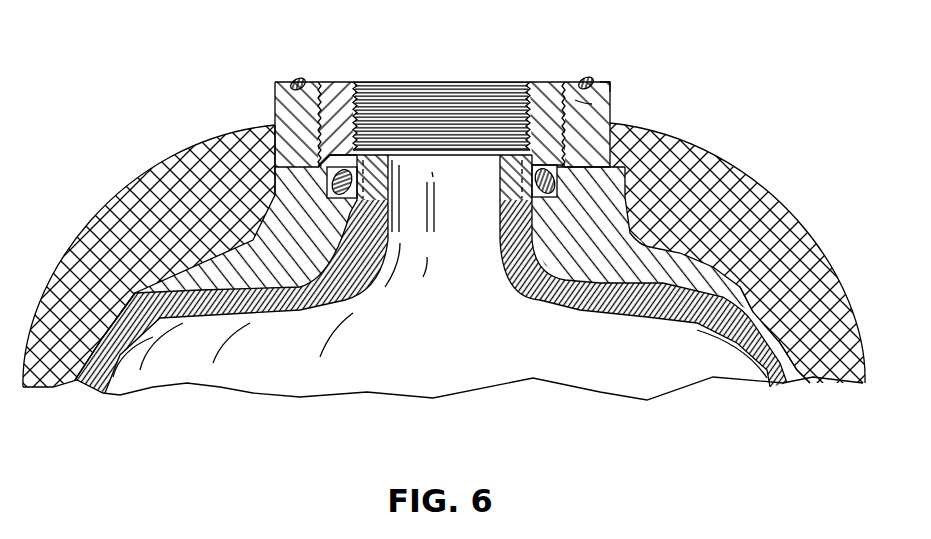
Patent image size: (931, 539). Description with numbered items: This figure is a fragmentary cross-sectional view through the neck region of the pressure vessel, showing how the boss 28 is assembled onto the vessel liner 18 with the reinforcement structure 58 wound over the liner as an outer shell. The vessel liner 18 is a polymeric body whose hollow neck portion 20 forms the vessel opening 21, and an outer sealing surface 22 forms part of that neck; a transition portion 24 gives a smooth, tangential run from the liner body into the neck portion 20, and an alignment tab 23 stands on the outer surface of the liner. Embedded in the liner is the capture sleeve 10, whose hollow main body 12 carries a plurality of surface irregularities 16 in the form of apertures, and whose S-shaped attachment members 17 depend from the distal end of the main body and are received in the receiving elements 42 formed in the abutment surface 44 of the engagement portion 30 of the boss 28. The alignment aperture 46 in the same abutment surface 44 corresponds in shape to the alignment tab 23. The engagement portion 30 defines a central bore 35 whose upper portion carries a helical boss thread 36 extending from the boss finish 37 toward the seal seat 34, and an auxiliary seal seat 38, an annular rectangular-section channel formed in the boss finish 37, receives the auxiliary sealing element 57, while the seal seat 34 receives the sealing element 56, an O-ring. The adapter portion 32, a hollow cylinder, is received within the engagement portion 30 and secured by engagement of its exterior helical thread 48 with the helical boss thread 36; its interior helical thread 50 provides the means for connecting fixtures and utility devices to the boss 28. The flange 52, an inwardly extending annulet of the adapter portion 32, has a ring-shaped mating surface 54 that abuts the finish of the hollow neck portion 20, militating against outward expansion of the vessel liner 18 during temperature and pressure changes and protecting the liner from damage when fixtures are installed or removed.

The capture sleeve 10 is at (487, 207).
The hollow main body 12 is at (510, 167).
The surface irregularities 16 is at (522, 188).
The attachment members 17 is at (535, 213).
The vessel liner 18 is at (597, 303).
The hollow neck portion 20 is at (535, 200).
The vessel opening 21 is at (432, 172).
The outer sealing surface 22 is at (320, 203).
The alignment tab 23 is at (340, 228).
The transition portion 24 is at (535, 226).
The boss 28 is at (355, 65).
The engagement portion 30 is at (610, 93).
The adapter portion 32 is at (539, 80).
The seal seat 34 is at (620, 168).
The central bore 35 is at (468, 92).
The helical boss thread 36 is at (660, 137).
The boss finish 37 is at (604, 80).
The auxiliary seal seat 38 is at (289, 84).
The receiving elements 42 is at (512, 250).
The abutment surface 44 is at (547, 297).
The alignment aperture 46 is at (318, 238).
The exterior helical thread 48 is at (585, 104).
The interior helical thread 50 is at (447, 92).
The flange 52 is at (405, 148).
The mating surface 54 is at (273, 125).
The sealing element 56 is at (327, 192).
The auxiliary sealing element 57 is at (586, 78).
The reinforcement structure 58 is at (833, 250).